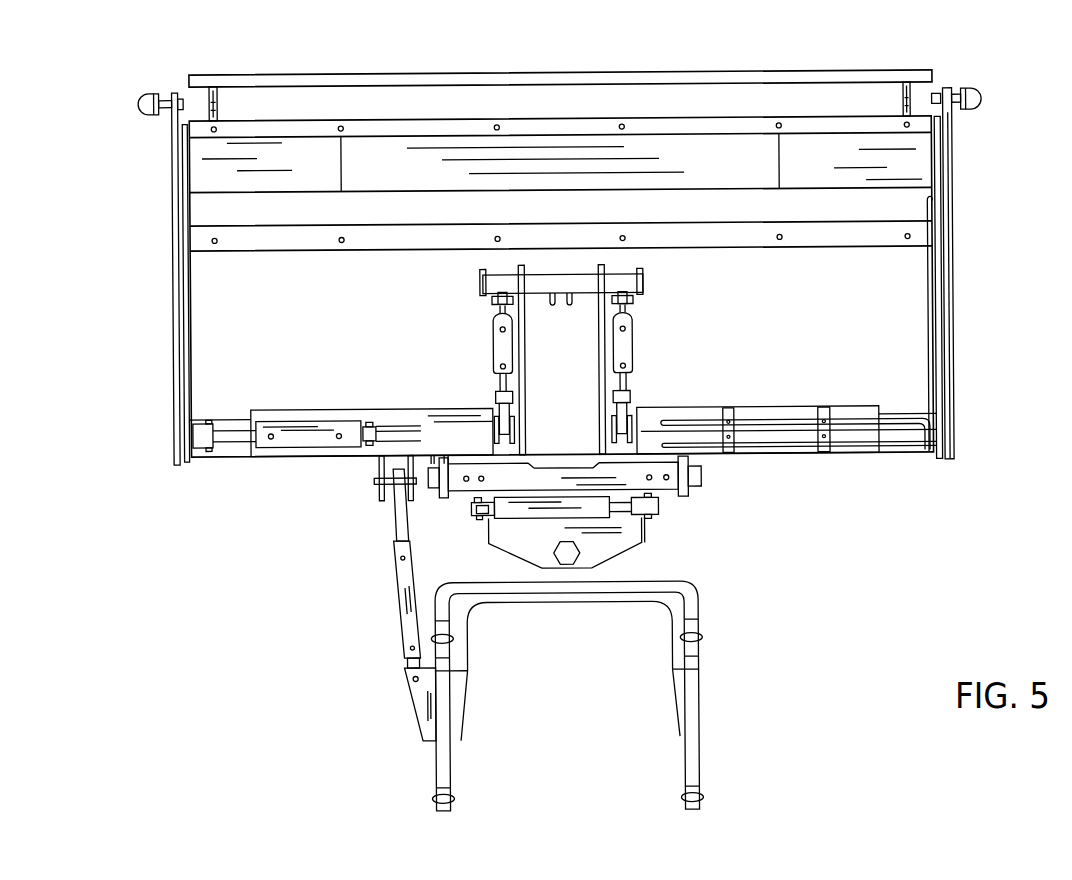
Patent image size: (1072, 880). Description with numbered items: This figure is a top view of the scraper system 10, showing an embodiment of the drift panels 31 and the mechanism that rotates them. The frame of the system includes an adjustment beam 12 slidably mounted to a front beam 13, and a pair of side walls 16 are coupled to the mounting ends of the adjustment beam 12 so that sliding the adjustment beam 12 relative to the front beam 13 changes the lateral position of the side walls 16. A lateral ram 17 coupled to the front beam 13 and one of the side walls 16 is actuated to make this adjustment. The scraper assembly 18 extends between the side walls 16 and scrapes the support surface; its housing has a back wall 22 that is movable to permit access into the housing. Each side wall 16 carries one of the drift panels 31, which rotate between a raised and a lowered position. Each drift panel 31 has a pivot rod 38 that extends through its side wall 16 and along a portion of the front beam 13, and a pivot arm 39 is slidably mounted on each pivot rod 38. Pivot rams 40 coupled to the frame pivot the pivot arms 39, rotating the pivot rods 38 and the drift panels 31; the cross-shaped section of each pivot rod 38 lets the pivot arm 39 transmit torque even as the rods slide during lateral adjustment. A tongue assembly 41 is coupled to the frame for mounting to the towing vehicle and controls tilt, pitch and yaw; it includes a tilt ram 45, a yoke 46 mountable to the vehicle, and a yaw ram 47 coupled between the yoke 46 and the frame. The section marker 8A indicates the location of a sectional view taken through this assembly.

The adjustment beam 12 is at (231, 447).
The front beam 13 is at (853, 450).
The side walls 16 is at (187, 467).
The lateral ram 17 is at (293, 441).
The scraper assembly 18 is at (842, 170).
The back wall 22 is at (662, 73).
The drift panels 31 is at (177, 448).
The pivot rods 38 is at (398, 412).
The pivot arms 39 is at (497, 412).
The pivot rams 40 is at (500, 348).
The tongue assembly 41 is at (697, 586).
The tilt ram 45 is at (530, 514).
The yoke 46 is at (699, 716).
The yaw ram 47 is at (398, 624).
The scraper system 10 is at (643, 393).
The section line 8A is at (512, 573).